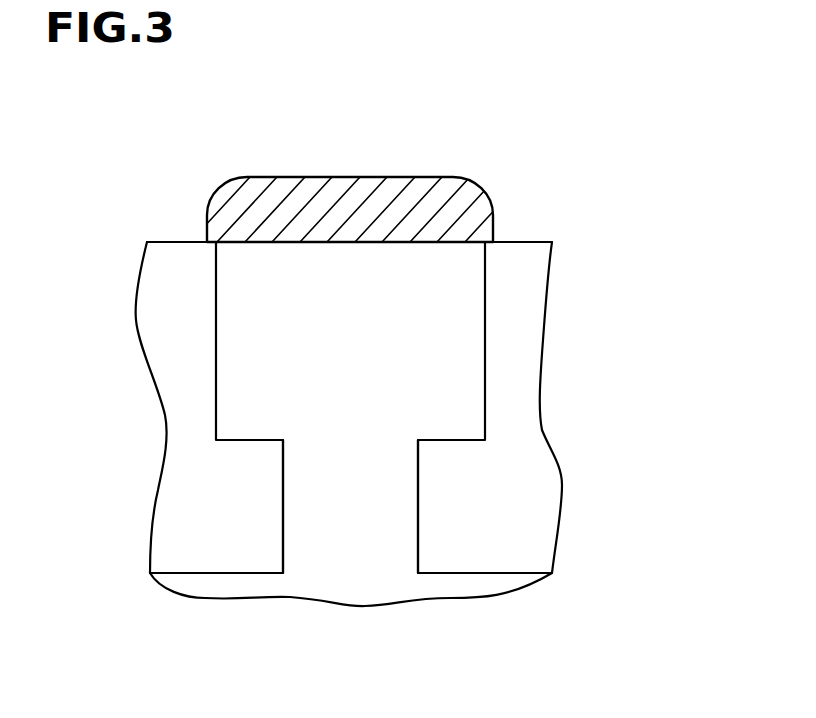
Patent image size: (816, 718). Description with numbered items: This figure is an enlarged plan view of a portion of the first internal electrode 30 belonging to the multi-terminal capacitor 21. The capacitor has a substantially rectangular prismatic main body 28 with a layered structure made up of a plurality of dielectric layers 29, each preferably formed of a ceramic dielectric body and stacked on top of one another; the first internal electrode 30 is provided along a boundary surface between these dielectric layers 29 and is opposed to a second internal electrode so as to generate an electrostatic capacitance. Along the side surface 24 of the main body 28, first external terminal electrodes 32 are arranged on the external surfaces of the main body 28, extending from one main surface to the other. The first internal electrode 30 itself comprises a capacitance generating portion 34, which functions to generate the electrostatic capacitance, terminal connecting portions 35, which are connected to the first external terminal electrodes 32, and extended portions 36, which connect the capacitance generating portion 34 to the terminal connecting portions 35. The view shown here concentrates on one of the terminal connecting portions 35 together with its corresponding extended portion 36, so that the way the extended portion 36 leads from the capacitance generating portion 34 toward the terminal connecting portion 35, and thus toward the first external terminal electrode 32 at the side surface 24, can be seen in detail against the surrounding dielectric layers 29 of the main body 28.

The multi-terminal capacitor 21 is at (68, 135).
The side surface 24 is at (172, 242).
The main body 28 is at (552, 293).
The dielectric layer 29 is at (525, 514).
The first internal electrode 30 is at (245, 599).
The first external terminal electrode 32 is at (368, 190).
The capacitance generating portion 34 is at (472, 585).
The terminal connecting portion 35 is at (248, 325).
The extended portion 36 is at (310, 493).